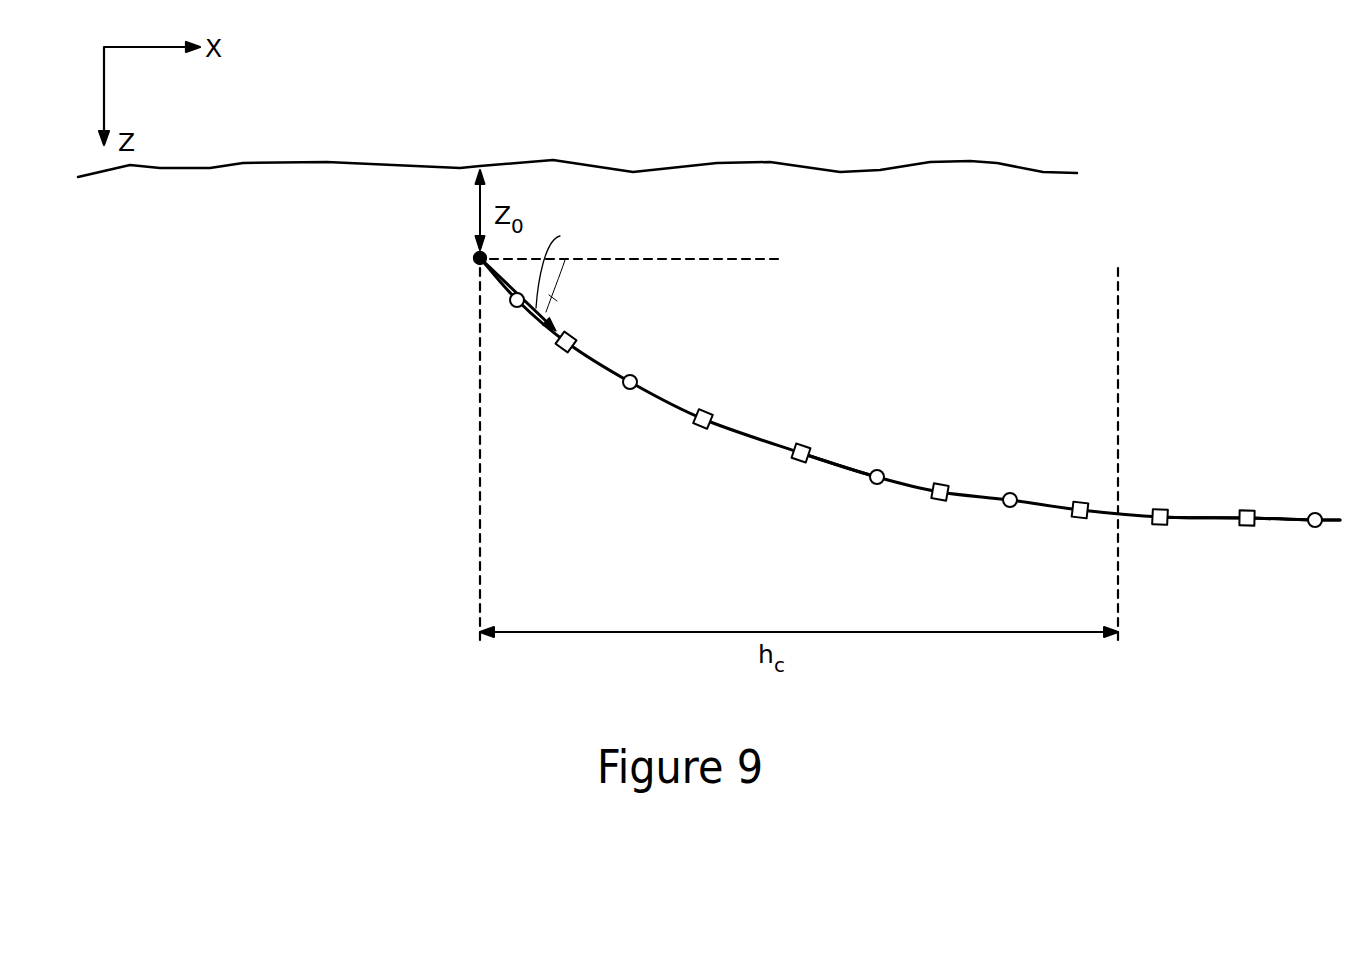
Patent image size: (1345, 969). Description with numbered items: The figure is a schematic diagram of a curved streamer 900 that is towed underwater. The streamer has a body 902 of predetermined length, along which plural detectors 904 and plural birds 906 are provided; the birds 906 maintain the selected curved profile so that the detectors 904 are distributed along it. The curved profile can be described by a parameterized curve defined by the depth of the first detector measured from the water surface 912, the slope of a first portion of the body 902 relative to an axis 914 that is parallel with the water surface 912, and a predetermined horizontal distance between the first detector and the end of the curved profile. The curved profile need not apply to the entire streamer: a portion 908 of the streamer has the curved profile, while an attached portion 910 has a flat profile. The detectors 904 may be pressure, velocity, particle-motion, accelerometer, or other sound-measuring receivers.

The curved streamer 900 is at (600, 490).
The body 902 is at (737, 428).
The detectors 904 is at (640, 377).
The birds 906 is at (578, 336).
The portion having the curved profile 908 is at (843, 465).
The portion having a flat profile 910 is at (1203, 515).
The water surface 912 is at (716, 163).
The axis 914 is at (707, 260).